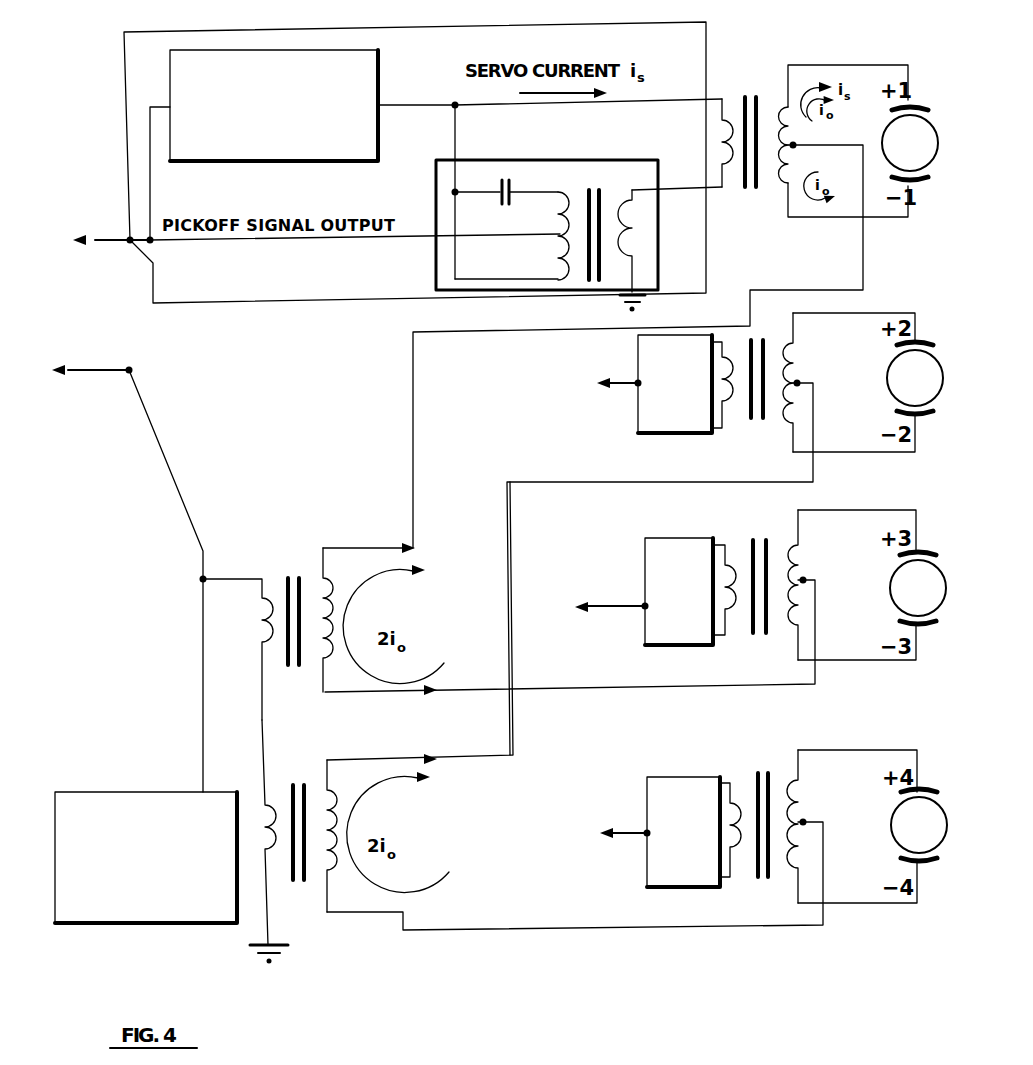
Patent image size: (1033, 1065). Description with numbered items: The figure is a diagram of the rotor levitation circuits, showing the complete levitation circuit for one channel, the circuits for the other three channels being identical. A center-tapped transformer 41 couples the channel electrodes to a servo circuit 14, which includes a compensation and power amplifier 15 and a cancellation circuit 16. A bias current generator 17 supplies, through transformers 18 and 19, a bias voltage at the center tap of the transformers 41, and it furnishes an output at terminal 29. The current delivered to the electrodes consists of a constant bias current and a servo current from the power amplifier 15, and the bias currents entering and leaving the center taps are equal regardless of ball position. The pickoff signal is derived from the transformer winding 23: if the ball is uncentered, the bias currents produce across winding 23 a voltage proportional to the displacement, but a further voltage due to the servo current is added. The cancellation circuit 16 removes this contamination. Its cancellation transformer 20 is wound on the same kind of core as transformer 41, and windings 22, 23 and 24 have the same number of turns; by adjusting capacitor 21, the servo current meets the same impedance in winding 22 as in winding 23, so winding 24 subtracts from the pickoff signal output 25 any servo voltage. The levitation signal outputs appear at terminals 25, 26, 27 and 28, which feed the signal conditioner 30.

The servo circuit 14 is at (596, 24).
The compensation and power amplifier 15 is at (355, 85).
The cancellation circuit 16 is at (583, 281).
The bias current generator 17 is at (157, 892).
The transformer 18 is at (286, 650).
The transformer 19 is at (292, 783).
The cancellation transformer 20 is at (604, 270).
The capacitor 21 is at (510, 197).
The winding 22 is at (651, 233).
The transformer winding 23 is at (731, 168).
The winding 24 is at (553, 238).
The pickoff signal output 25 is at (128, 239).
The terminal 26 is at (633, 384).
The terminal 27 is at (628, 599).
The terminal 28 is at (639, 834).
The terminal 29 is at (132, 372).
The signal conditioner 30 is at (335, 544).
The center-tapped transformer 41 is at (754, 80).